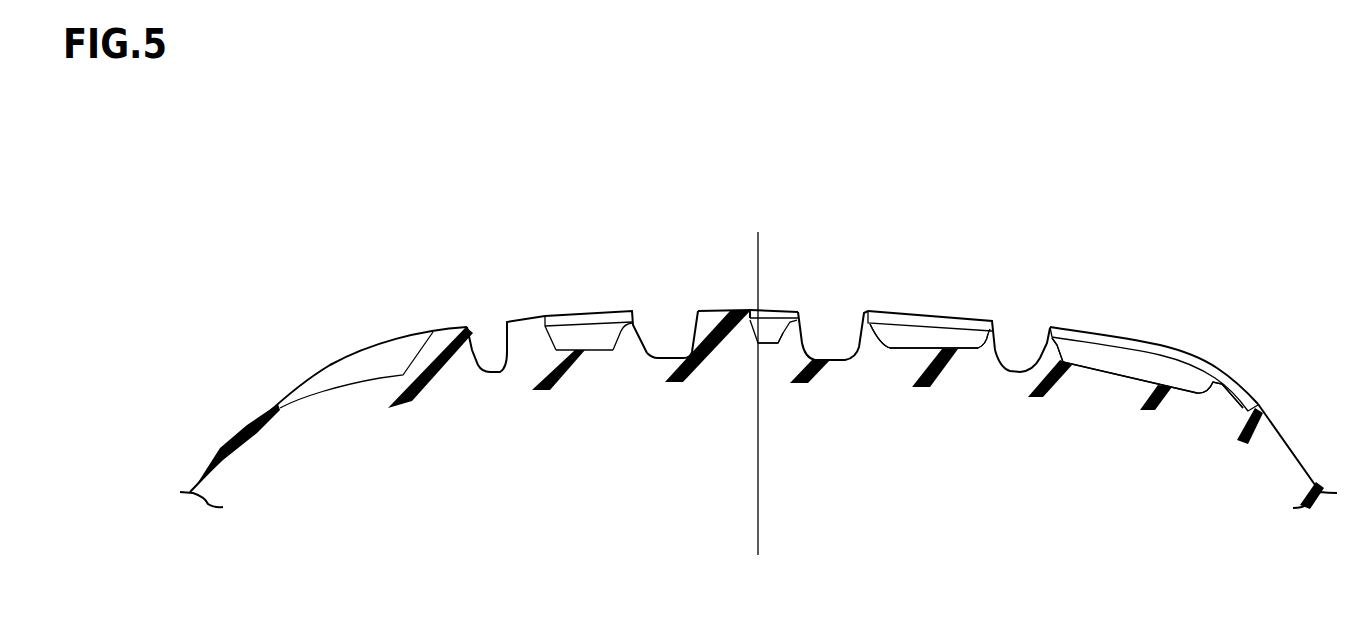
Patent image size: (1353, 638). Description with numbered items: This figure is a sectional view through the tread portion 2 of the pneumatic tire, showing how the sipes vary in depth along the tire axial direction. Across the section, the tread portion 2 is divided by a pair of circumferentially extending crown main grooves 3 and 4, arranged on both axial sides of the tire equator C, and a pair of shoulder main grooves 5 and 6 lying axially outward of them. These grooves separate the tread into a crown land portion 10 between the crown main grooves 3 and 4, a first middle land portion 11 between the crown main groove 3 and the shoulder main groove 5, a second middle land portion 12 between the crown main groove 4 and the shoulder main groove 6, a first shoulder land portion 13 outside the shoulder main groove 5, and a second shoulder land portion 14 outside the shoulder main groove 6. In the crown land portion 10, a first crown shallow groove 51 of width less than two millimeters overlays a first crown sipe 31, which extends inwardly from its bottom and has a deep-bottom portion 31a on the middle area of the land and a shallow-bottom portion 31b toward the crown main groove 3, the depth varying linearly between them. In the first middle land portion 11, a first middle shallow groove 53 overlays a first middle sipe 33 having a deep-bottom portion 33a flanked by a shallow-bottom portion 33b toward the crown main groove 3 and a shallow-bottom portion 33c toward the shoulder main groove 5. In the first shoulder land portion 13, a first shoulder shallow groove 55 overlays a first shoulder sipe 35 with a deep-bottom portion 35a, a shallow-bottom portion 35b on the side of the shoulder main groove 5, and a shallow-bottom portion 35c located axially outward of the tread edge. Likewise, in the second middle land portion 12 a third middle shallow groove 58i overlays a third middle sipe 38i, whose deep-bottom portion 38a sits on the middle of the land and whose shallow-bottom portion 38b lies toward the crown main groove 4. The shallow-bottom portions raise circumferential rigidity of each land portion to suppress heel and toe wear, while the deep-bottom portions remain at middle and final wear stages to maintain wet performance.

The tread portion 2 is at (1235, 288).
The first crown main groove 3 is at (835, 320).
The second crown main groove 4 is at (660, 338).
The first shoulder main groove 5 is at (1020, 338).
The second shoulder main groove 6 is at (493, 338).
The crown land portion 10 is at (722, 307).
The first middle land portion 11 is at (928, 308).
The second middle land portion 12 is at (575, 313).
The first shoulder land portion 13 is at (1128, 335).
The second shoulder land portion 14 is at (368, 338).
The first crown sipe 31 is at (768, 327).
The deep-bottom portion 31a is at (765, 348).
The shallow-bottom portion 31b is at (787, 338).
The first middle sipe 33 is at (902, 337).
The deep-bottom portion 33a is at (913, 350).
The shallow-bottom portion 33b is at (877, 334).
The shallow-bottom portion 33c is at (980, 349).
The first shoulder sipe 35 is at (1085, 355).
The deep-bottom portion 35a is at (1123, 375).
The shallow-bottom portion 35b is at (1052, 343).
The shallow-bottom portion 35c is at (1227, 398).
The third middle sipe 38i is at (565, 342).
The deep-bottom portion 38a is at (590, 360).
The shallow-bottom portion 38b is at (627, 360).
The first crown shallow groove 51 is at (785, 321).
The first middle shallow groove 53 is at (957, 322).
The first shoulder shallow groove 55 is at (1177, 352).
The third middle shallow groove 58i is at (605, 325).
The tire equator C is at (758, 310).